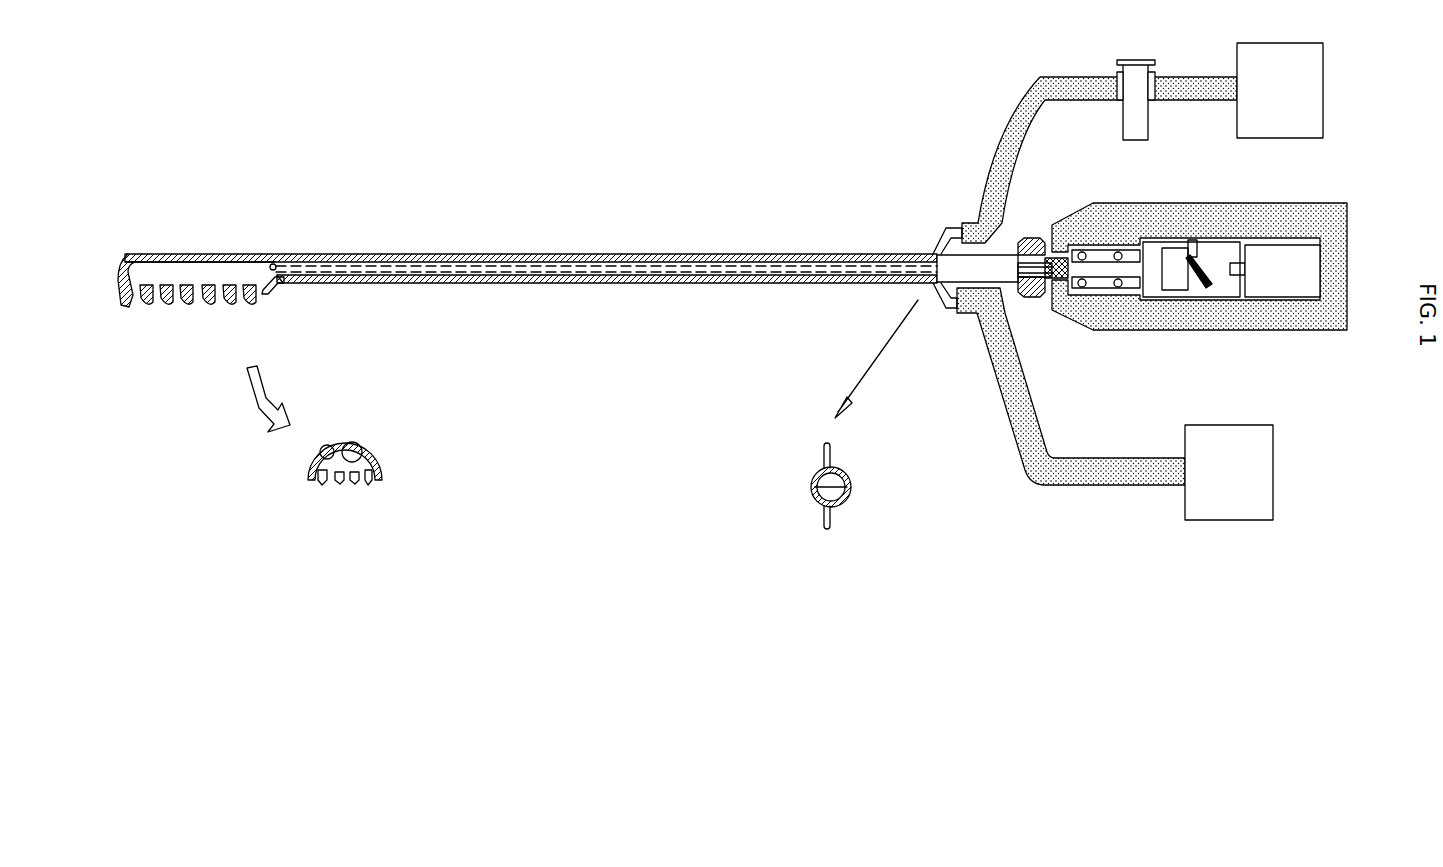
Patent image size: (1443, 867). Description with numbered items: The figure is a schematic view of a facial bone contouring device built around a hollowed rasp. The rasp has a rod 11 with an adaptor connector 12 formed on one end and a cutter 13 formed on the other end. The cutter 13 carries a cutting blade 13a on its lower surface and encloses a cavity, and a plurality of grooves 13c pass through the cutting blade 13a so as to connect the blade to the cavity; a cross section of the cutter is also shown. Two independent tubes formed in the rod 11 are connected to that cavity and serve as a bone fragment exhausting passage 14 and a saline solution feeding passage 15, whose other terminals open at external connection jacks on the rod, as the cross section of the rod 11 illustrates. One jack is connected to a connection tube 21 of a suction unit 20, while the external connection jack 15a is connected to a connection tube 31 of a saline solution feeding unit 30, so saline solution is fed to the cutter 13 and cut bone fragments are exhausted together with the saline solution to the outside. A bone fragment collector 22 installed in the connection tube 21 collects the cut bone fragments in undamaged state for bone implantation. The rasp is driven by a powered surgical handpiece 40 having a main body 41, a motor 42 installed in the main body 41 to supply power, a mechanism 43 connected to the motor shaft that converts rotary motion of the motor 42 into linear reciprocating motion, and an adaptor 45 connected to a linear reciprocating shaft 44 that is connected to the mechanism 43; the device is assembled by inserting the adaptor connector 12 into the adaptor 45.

The rod 11 is at (590, 256).
The adaptor connector 12 is at (1027, 290).
The cutter 13 is at (196, 294).
The cutting blade 13a is at (148, 308).
The grooves 13c is at (183, 309).
The bone fragment exhausting passage 14 is at (440, 265).
The saline solution feeding passage 15 is at (818, 505).
The external connection jack 15a is at (933, 303).
The suction unit 20 is at (1280, 90).
The connection tube 21 is at (1058, 75).
The bone fragment collector 22 is at (1150, 60).
The saline solution feeding unit 30 is at (1229, 472).
The connection tube 31 is at (1000, 430).
The powered surgical handpiece 40 is at (1199, 270).
The main body 41 is at (1235, 330).
The motor 42 is at (1272, 248).
The mechanism 43 is at (1183, 272).
The linear reciprocating shaft 44 is at (1060, 245).
The adaptor 45 is at (1035, 228).